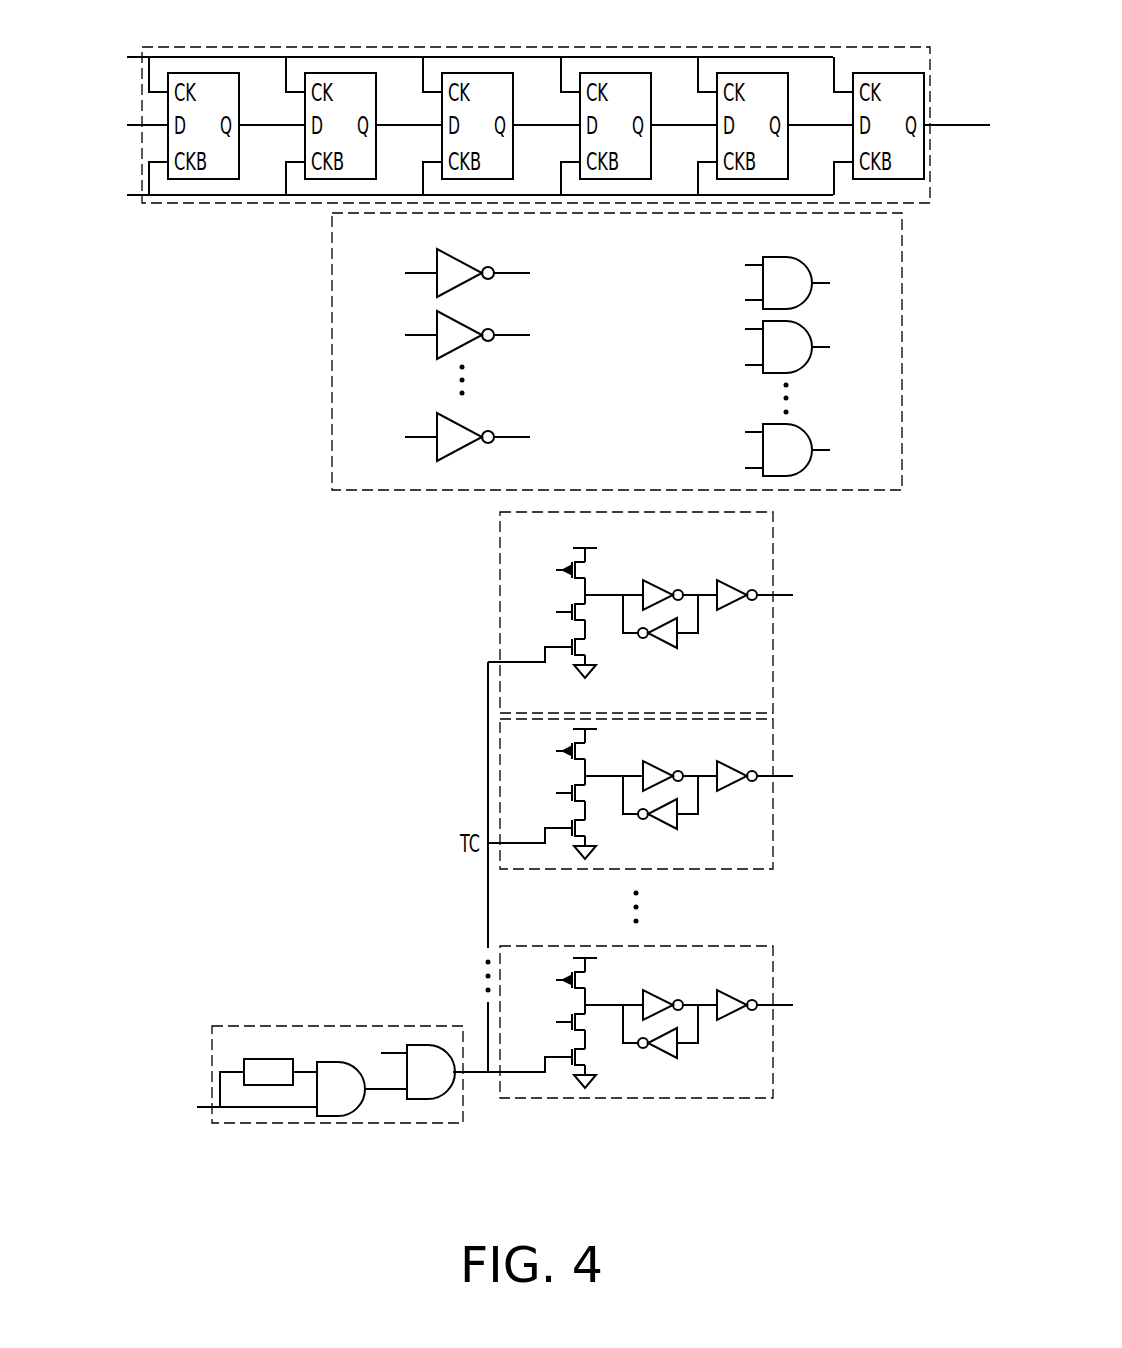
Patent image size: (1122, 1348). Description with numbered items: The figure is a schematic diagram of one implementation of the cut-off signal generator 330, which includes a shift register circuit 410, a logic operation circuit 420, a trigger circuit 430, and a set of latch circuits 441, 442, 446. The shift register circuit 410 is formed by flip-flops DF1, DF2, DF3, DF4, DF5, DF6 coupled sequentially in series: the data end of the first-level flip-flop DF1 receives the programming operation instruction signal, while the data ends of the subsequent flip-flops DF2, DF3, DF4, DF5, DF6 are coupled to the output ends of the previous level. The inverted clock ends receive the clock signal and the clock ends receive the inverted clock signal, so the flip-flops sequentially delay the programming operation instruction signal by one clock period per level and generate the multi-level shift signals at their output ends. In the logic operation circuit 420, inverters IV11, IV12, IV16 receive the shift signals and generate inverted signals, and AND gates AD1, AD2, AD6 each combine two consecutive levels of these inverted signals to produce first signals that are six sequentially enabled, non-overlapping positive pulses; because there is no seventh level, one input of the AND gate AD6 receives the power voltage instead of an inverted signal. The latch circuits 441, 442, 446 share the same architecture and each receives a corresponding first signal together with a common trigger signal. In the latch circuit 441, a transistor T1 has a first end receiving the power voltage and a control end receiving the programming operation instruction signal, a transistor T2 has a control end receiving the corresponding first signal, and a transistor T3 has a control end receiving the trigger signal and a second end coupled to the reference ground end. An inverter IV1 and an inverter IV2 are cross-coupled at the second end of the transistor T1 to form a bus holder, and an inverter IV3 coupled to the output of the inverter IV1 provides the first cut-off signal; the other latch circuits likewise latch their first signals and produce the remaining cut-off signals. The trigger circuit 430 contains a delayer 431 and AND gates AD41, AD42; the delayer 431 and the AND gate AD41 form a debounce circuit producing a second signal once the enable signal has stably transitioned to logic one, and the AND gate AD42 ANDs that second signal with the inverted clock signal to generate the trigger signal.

The shift register circuit 410 is at (937, 48).
The flip-flop DF1 is at (211, 73).
The flip-flop DF2 is at (348, 73).
The flip-flop DF3 is at (485, 73).
The flip-flop DF4 is at (623, 73).
The flip-flop DF5 is at (760, 73).
The flip-flop DF6 is at (896, 73).
The logic operation circuit 420 is at (332, 352).
The inverter IV11 is at (463, 261).
The inverter IV12 is at (463, 323).
The inverter IV16 is at (463, 425).
The AND gate AD1 is at (803, 262).
The AND gate AD2 is at (810, 326).
The AND gate AD6 is at (805, 428).
The latch circuit 441 is at (671, 612).
The latch circuit 442 is at (773, 844).
The latch circuit 446 is at (773, 1074).
The transistor T1 is at (589, 570).
The transistor T2 is at (589, 612).
The transistor T3 is at (589, 647).
The inverter IV1 is at (663, 584).
The inverter IV2 is at (657, 649).
The inverter IV3 is at (737, 584).
The trigger circuit 430 is at (327, 1026).
The delayer 431 is at (268, 1059).
The AND gate AD41 is at (334, 1116).
The AND gate AD42 is at (420, 1098).
The cut-off signal generator 330 is at (968, 1183).